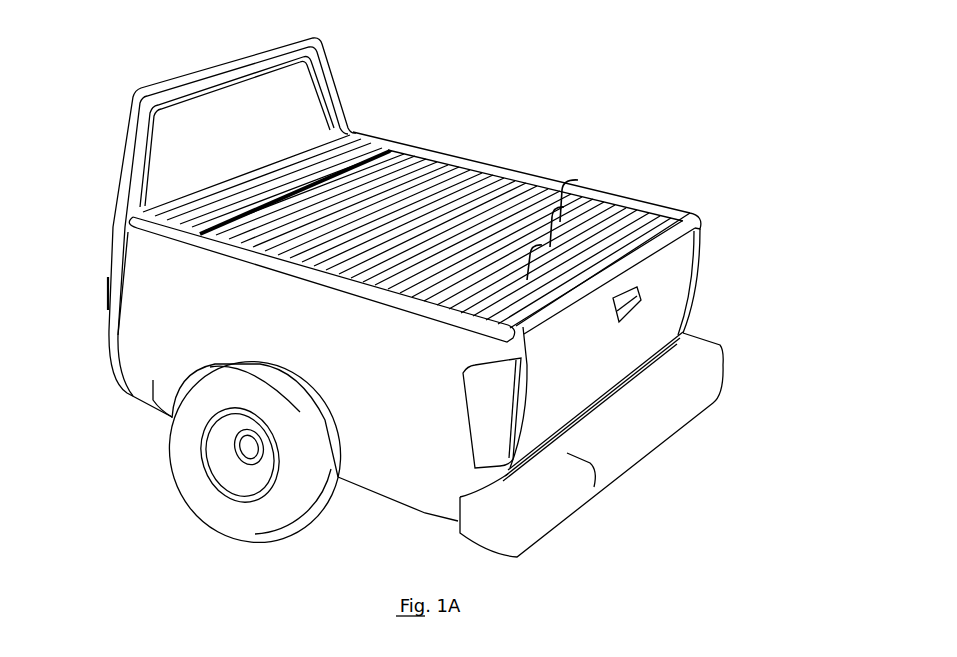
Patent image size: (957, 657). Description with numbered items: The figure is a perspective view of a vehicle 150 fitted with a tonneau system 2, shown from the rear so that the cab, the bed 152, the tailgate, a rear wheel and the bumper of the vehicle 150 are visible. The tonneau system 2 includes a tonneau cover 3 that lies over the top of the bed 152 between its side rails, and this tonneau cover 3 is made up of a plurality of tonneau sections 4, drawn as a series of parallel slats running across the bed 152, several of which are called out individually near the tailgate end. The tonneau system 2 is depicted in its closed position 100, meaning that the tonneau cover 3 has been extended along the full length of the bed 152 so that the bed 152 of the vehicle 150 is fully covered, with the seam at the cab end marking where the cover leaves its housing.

The closed position 100 is at (451, 285).
The tonneau system 2 is at (415, 174).
The tonneau cover 3 is at (470, 180).
The tonneau section 4 is at (578, 180).
The vehicle 150 is at (153, 313).
The bed 152 is at (347, 168).